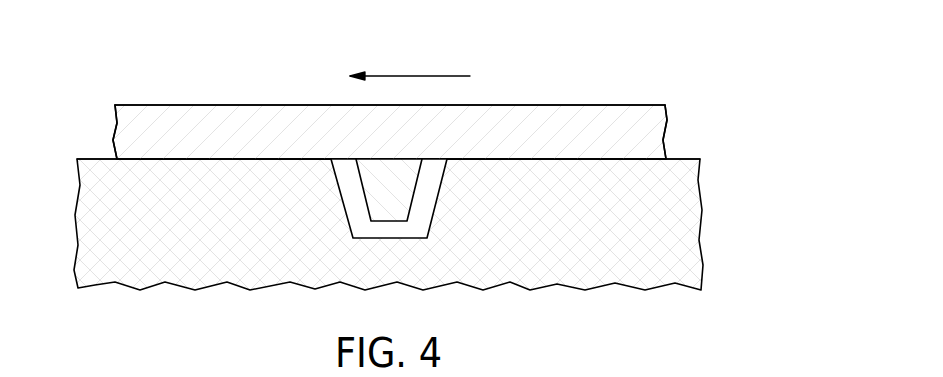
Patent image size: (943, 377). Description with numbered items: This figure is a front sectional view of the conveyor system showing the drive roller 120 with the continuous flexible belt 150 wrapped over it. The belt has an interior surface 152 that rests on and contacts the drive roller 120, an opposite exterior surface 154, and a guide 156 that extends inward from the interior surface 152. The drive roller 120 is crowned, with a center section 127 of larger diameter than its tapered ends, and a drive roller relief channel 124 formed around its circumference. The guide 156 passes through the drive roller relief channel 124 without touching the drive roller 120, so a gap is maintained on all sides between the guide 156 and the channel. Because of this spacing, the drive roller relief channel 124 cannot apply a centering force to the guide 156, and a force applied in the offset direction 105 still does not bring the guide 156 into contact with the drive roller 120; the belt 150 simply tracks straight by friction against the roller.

The offset direction 105 is at (420, 76).
The drive roller 120 is at (717, 208).
The drive roller relief channel 124 is at (392, 238).
The center section 127 is at (88, 159).
The continuous flexible belt 150 is at (650, 102).
The interior surface 152 is at (608, 159).
The exterior surface 154 is at (165, 105).
The guide 156 is at (416, 197).